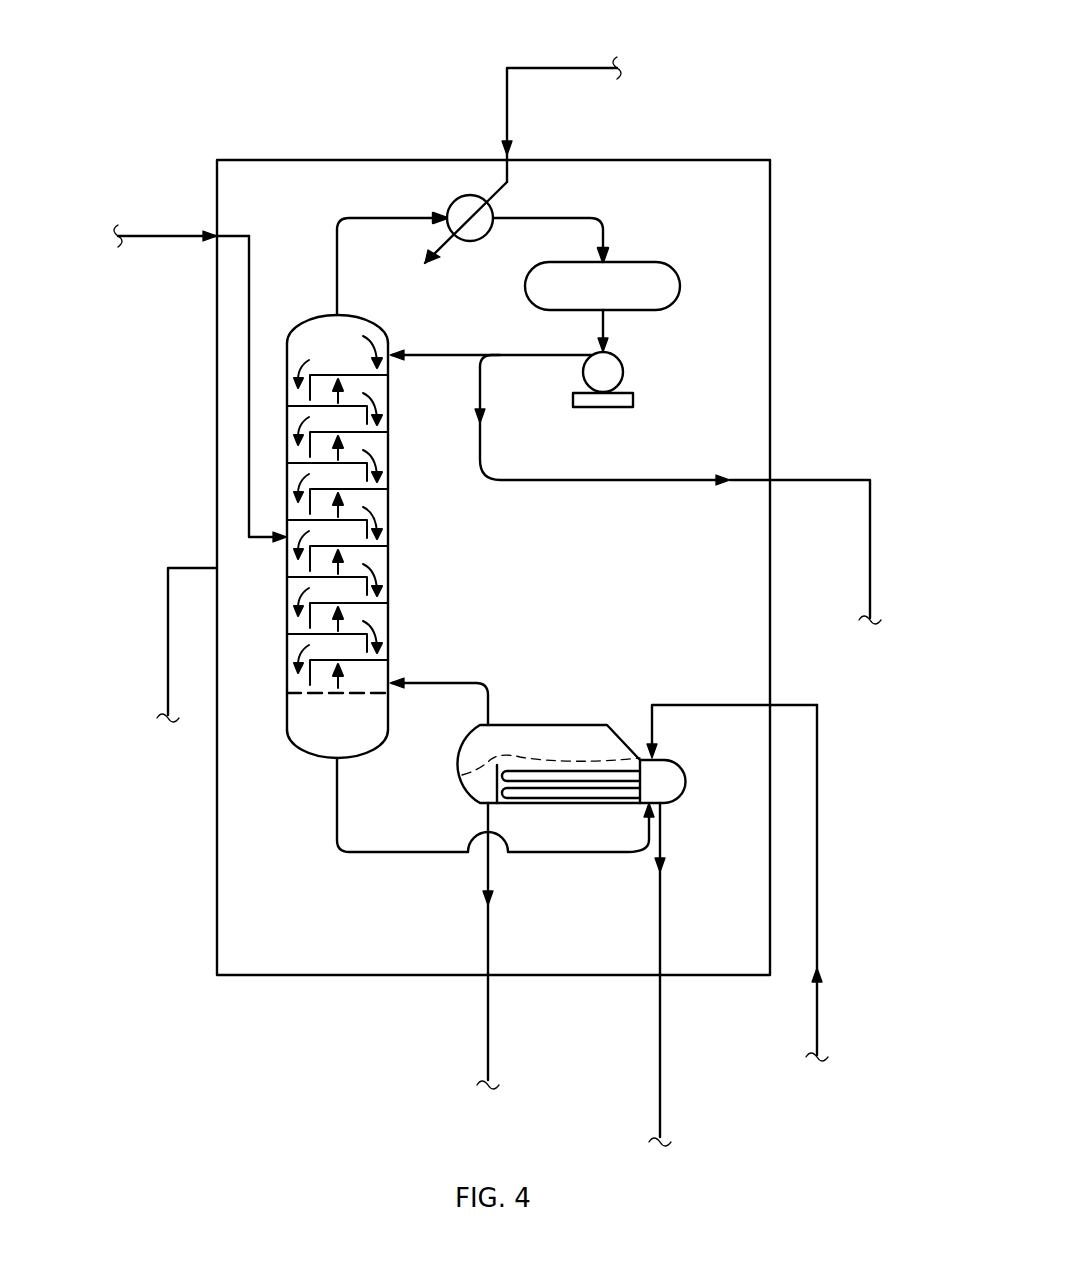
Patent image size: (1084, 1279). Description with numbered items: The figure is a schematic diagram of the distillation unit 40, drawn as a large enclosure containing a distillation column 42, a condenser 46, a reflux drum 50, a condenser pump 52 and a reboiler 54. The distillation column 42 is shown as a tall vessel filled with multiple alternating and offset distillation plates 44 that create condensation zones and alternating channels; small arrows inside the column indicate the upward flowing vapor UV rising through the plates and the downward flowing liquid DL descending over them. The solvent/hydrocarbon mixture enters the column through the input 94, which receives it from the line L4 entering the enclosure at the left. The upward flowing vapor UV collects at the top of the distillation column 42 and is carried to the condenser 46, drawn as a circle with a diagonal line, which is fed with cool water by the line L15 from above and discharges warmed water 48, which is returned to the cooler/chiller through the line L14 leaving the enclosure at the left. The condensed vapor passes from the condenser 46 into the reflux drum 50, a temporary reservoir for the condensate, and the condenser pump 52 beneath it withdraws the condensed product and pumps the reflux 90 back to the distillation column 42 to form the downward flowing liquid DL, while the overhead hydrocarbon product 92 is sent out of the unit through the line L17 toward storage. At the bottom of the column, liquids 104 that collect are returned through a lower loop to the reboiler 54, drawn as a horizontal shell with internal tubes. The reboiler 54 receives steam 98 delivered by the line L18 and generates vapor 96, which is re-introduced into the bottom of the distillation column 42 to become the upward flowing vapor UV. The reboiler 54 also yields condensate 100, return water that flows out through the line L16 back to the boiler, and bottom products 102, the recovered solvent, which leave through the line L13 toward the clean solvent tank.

The distillation unit 40 is at (247, 160).
The distillation column 42 is at (269, 536).
The distillation plates 44 is at (298, 463).
The condenser 46 is at (455, 205).
The warmed water 48 is at (423, 262).
The reflux drum 50 is at (625, 262).
The condenser pump 52 is at (622, 368).
The reboiler 54 is at (508, 712).
The reflux 90 is at (430, 355).
The hydrocarbon product 92 is at (660, 480).
The input 94 is at (249, 272).
The vapor 96 is at (430, 683).
The steam 98 is at (673, 705).
The condensate 100 is at (660, 900).
The bottom products 102 is at (488, 872).
The liquids 104 is at (385, 850).
The upward flowing vapor UV is at (292, 568).
The downward flowing liquid DL is at (388, 566).
The line L4 is at (155, 236).
The line L13 is at (488, 1055).
The line L14 is at (168, 645).
The line L15 is at (577, 68).
The line L16 is at (660, 1115).
The line L17 is at (870, 552).
The line L18 is at (818, 1025).